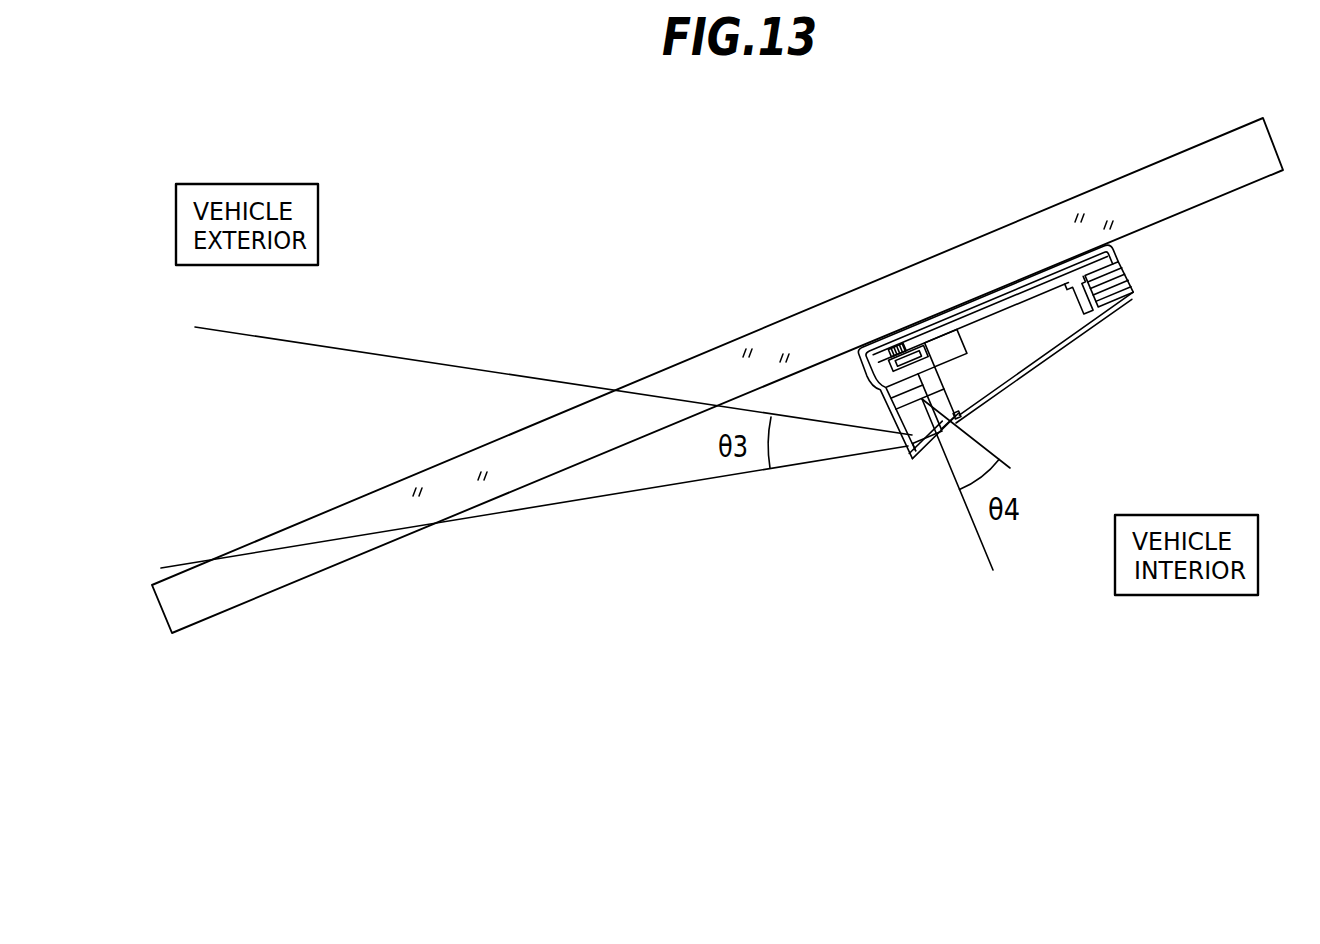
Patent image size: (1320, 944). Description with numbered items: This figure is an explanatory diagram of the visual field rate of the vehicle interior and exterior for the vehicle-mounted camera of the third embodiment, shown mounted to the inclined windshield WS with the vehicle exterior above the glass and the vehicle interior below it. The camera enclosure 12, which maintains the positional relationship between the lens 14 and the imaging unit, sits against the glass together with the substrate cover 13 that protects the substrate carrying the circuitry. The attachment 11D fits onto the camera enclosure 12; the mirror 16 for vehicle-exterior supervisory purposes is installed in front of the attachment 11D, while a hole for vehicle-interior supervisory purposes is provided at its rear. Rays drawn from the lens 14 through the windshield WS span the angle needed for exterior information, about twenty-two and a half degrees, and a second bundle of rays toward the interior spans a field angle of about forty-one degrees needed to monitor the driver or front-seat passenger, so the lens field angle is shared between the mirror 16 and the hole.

The windshield WS is at (1220, 172).
The camera enclosure 12 is at (868, 378).
The substrate cover 13 is at (1036, 366).
The lens 14 is at (918, 390).
The mirror 16 is at (917, 443).
The attachment 11D is at (928, 455).